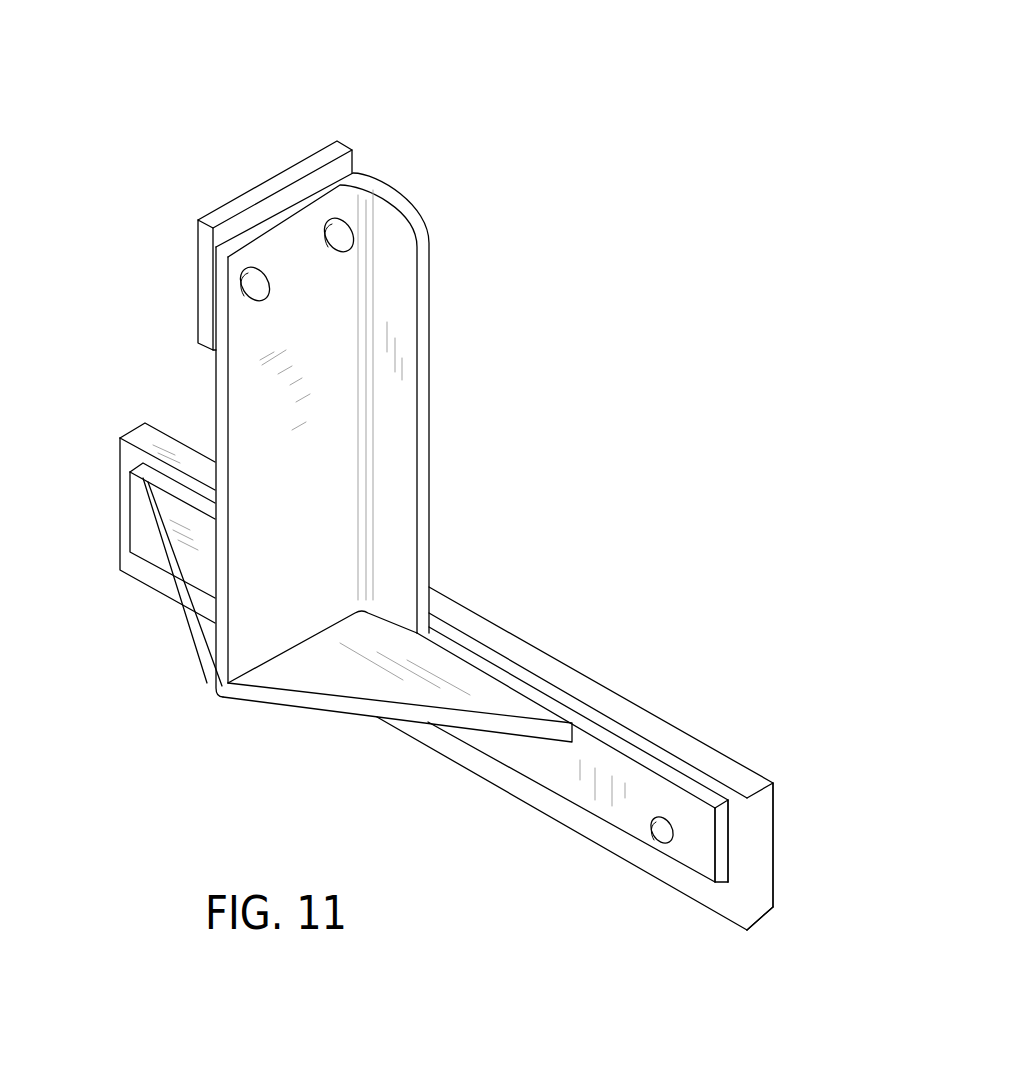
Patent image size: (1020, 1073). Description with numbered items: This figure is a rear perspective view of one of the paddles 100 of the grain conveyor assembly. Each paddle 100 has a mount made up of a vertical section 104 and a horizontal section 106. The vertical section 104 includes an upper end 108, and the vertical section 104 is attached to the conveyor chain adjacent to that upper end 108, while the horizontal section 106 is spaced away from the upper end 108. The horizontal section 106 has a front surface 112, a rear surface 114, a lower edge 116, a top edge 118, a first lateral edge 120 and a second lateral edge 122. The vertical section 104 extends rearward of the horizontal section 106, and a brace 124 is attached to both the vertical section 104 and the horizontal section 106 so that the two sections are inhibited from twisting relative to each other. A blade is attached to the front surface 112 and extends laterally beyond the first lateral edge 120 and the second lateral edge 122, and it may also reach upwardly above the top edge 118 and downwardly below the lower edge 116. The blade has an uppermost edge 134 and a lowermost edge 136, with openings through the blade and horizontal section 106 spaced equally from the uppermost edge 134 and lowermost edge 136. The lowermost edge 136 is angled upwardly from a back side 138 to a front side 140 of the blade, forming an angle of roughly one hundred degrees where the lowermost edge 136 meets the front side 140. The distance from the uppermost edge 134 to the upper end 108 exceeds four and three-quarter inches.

The paddle 100 is at (527, 365).
The vertical section 104 is at (243, 620).
The horizontal section 106 is at (714, 887).
The upper end 108 is at (272, 182).
The front surface 112 is at (728, 852).
The rear surface 114 is at (620, 815).
The lower edge 116 is at (527, 780).
The top edge 118 is at (635, 755).
The first lateral edge 120 is at (723, 830).
The second lateral edge 122 is at (128, 513).
The brace 124 is at (327, 687).
The uppermost edge 134 is at (732, 770).
The lowermost edge 136 is at (760, 918).
The back side 138 is at (660, 873).
The front side 140 is at (773, 868).